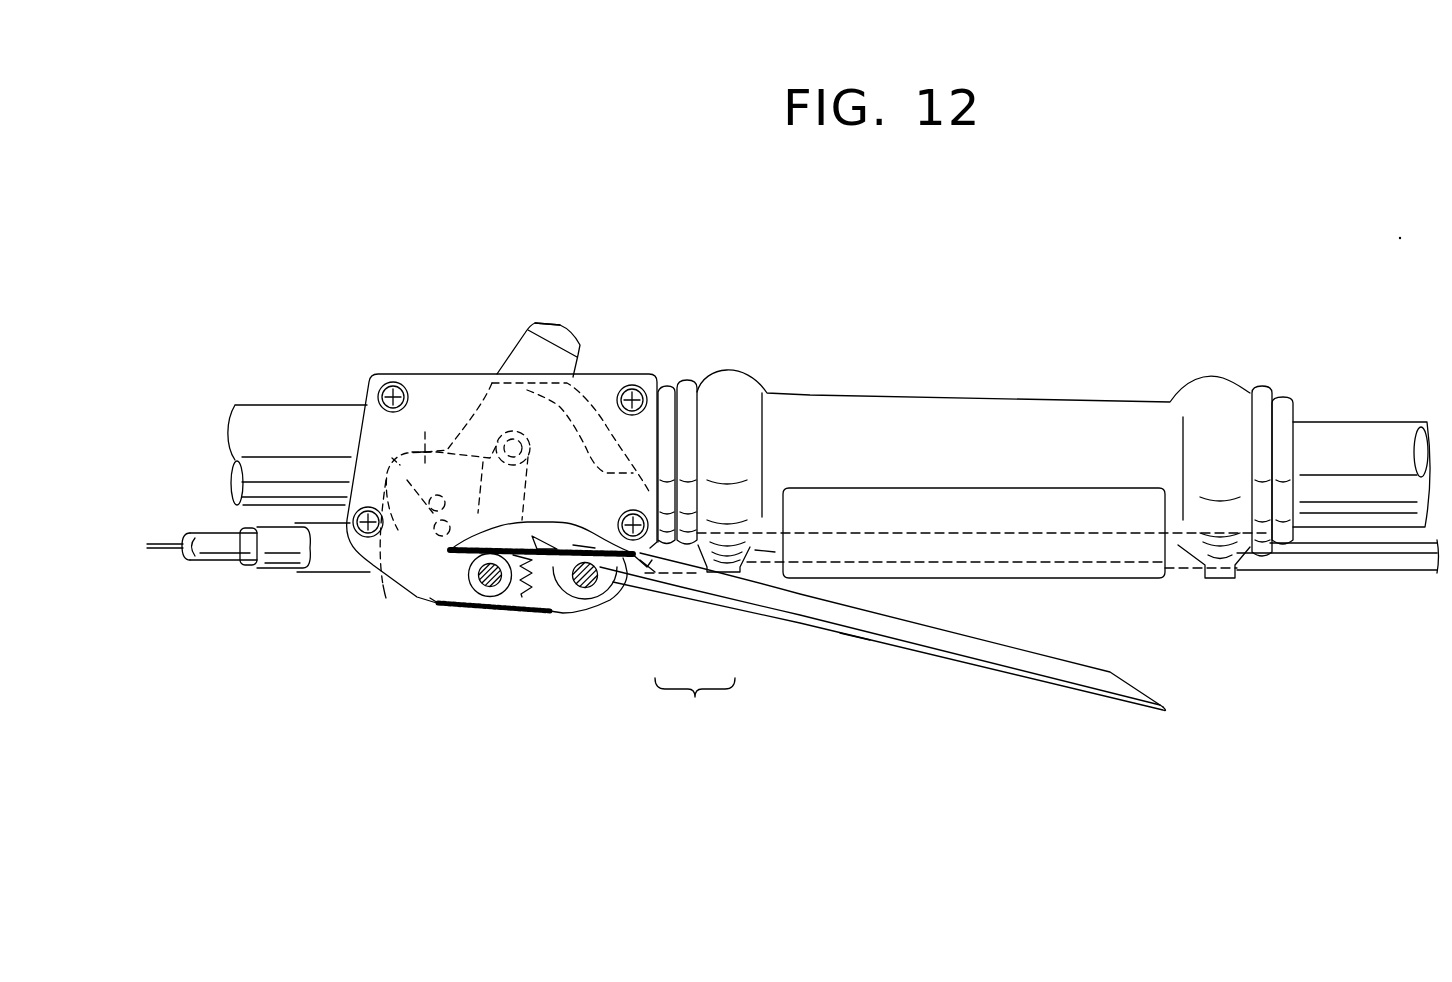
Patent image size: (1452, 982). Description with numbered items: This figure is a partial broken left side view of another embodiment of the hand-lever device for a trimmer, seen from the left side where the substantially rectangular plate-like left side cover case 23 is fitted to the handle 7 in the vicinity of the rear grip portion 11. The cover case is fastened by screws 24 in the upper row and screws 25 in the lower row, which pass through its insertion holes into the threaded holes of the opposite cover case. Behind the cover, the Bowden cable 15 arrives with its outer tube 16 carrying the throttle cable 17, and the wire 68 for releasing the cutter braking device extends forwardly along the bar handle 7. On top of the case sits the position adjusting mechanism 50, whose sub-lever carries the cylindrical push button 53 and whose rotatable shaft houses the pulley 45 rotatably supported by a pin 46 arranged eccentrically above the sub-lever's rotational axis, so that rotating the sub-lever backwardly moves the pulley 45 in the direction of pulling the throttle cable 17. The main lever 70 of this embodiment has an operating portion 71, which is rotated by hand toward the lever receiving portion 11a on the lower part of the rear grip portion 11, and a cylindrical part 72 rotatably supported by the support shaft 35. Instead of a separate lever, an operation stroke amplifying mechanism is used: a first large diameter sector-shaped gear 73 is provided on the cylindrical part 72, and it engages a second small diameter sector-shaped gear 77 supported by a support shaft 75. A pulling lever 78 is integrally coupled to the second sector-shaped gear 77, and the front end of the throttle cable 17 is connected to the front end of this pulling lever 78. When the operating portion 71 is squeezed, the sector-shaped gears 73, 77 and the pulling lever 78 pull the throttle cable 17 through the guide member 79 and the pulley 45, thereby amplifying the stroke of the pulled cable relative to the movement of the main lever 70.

The handle 7 is at (282, 410).
The rear grip portion 11 is at (950, 408).
The lever receiving portion 11a is at (1080, 572).
The Bowden cable 15 is at (695, 702).
The outer tube 16 is at (768, 545).
The throttle cable 17 is at (620, 588).
The left side cover case 23 is at (432, 385).
The screws 24 is at (390, 383).
The screws 25 is at (347, 522).
The support shaft 35 is at (588, 588).
The pulley 45 is at (425, 428).
The pin 46 is at (382, 444).
The position adjusting mechanism 50 is at (521, 353).
The push button 53 is at (567, 330).
The wire 68 is at (163, 548).
The main lever 70 is at (933, 657).
The operating portion 71 is at (855, 636).
The cylindrical part 72 is at (580, 598).
The first large diameter sector-shaped gear 73 is at (543, 588).
The support shaft 75 is at (483, 585).
The second small diameter sector-shaped gear 77 is at (522, 584).
The pulling lever 78 is at (450, 580).
The guide member 79 is at (383, 585).